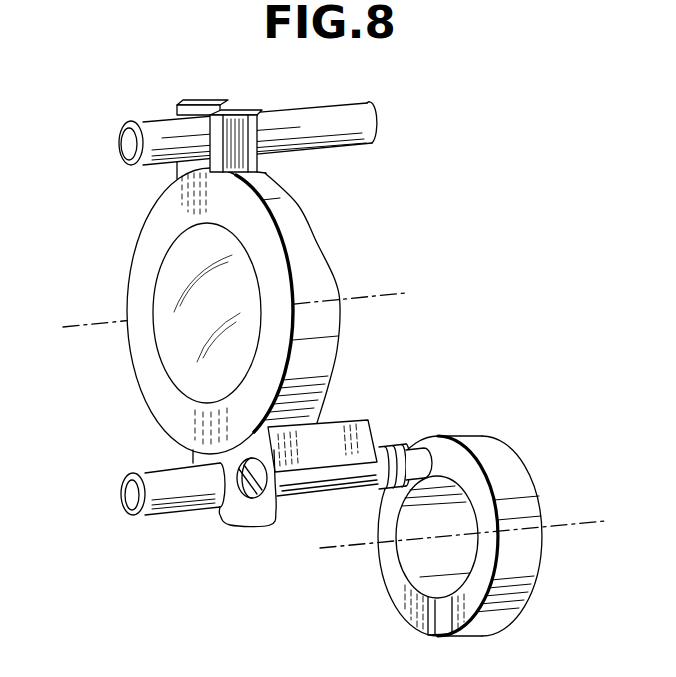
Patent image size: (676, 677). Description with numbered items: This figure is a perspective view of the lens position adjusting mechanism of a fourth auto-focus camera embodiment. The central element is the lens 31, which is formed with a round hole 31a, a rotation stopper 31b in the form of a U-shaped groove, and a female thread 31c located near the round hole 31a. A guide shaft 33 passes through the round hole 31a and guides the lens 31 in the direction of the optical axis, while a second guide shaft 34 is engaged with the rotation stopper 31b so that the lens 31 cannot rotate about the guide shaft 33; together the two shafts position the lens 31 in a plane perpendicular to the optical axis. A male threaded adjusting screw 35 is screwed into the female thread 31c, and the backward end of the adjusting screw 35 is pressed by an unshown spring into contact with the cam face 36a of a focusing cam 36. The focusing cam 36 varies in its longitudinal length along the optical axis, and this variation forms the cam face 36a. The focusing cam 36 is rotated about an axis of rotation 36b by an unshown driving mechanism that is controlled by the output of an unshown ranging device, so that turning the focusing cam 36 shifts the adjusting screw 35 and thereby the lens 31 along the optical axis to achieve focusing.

The lens 31 is at (164, 300).
The round hole 31a is at (228, 526).
The rotation stopper 31b is at (210, 133).
The female thread 31c is at (282, 478).
The guide shaft 33 is at (172, 514).
The guide shaft 34 is at (347, 146).
The adjusting screw 35 is at (392, 447).
The focusing cam 36 is at (479, 502).
The cam face 36a is at (467, 477).
The axis of rotation 36b is at (587, 522).